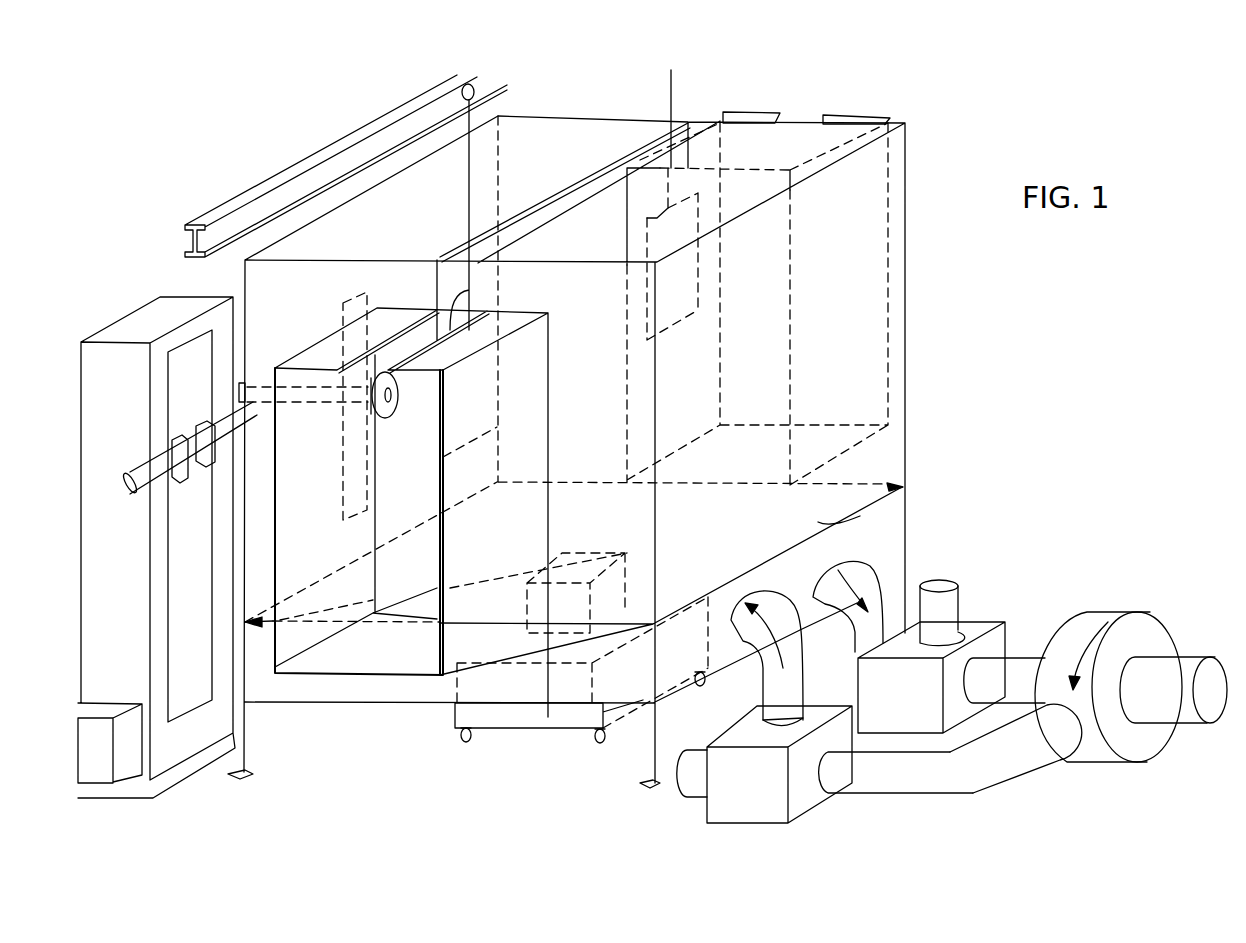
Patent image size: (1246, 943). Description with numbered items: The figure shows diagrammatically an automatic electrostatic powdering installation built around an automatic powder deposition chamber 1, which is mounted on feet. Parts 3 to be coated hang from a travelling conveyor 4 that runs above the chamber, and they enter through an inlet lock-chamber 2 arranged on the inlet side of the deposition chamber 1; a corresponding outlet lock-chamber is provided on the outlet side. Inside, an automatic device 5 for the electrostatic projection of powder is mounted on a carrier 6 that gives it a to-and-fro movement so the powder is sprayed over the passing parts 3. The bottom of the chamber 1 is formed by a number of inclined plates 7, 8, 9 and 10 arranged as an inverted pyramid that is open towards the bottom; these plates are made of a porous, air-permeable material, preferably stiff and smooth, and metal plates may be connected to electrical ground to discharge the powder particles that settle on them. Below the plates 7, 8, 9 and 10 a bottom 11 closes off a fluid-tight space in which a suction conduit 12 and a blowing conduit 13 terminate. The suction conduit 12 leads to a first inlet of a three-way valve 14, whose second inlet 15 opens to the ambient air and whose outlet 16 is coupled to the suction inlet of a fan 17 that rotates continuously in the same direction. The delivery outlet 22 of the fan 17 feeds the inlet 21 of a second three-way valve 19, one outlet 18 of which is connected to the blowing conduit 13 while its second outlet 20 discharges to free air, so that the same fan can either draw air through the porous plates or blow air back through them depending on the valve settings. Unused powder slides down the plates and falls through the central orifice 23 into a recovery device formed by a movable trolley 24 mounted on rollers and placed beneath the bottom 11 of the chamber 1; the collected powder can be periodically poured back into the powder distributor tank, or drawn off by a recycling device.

The automatic powder deposition chamber 1 is at (907, 312).
The inlet lock-chamber 2 is at (440, 560).
The parts 3 is at (652, 218).
The travelling conveyor 4 is at (362, 133).
The automatic device for the electrostatic projection of powder 5 is at (380, 413).
The carrier 6 is at (120, 370).
The inclined plate 7 is at (807, 494).
The inclined plate 8 is at (818, 522).
The inclined plate 9 is at (487, 603).
The inclined plate 10 is at (500, 543).
The bottom 11 is at (873, 620).
The suction conduit 12 is at (940, 633).
The blowing conduit 13 is at (760, 685).
The three-way valve 14 is at (978, 625).
The second inlet 15 is at (977, 678).
The outlet 16 is at (1041, 645).
The fan 17 is at (1156, 628).
The outlet 18 is at (800, 723).
The second three-way valve 19 is at (763, 798).
The second outlet 20 is at (697, 777).
The inlet 21 is at (827, 773).
The delivery outlet 22 is at (1057, 722).
The central orifice 23 is at (580, 567).
The movable trolley 24 is at (602, 717).